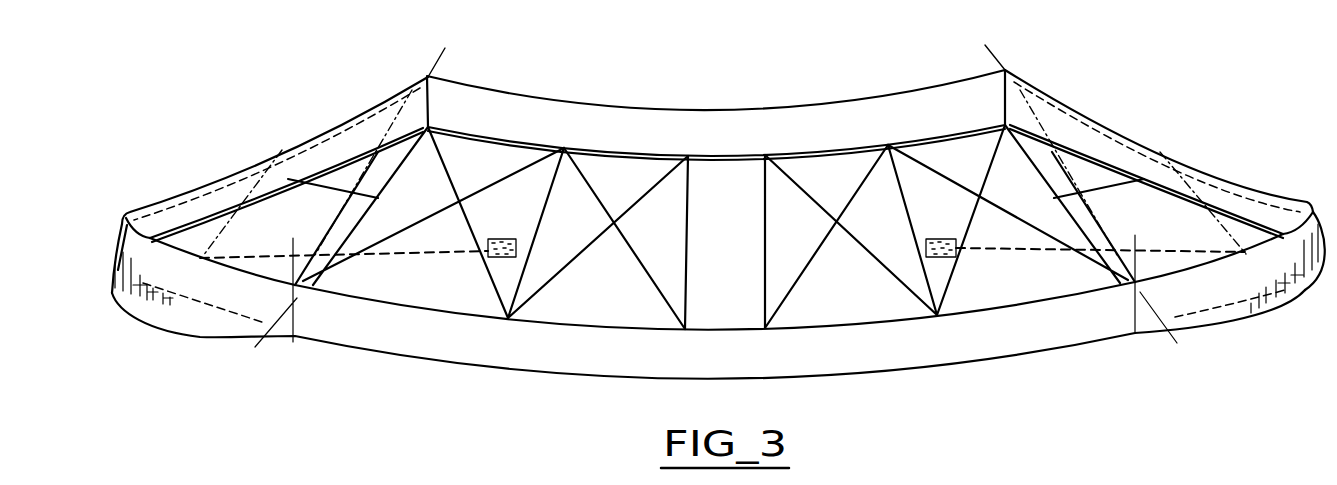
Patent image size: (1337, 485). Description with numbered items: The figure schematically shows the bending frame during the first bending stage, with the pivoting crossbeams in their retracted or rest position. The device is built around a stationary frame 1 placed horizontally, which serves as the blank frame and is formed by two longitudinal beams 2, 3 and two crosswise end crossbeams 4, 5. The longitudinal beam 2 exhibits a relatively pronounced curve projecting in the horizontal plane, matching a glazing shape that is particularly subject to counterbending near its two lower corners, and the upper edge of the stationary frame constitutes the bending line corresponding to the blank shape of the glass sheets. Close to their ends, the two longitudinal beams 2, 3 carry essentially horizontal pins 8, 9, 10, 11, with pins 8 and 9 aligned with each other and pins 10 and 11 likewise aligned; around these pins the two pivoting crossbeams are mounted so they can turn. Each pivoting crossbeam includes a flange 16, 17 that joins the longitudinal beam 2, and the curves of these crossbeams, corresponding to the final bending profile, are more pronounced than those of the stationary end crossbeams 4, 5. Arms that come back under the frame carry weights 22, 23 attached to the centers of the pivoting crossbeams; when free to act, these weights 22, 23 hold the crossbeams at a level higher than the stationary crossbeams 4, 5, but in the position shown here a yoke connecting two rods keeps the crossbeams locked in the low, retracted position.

The stationary frame 1 is at (643, 352).
The longitudinal beam 2 is at (540, 353).
The longitudinal beam 3 is at (808, 120).
The end crossbeam 4 is at (225, 193).
The end crossbeam 5 is at (1130, 157).
The pin 8 is at (299, 290).
The pin 9 is at (432, 74).
The pin 10 is at (1130, 292).
The pin 11 is at (1008, 68).
The flange 16 is at (190, 315).
The flange 17 is at (1248, 307).
The weight 22 is at (500, 238).
The weight 23 is at (940, 238).